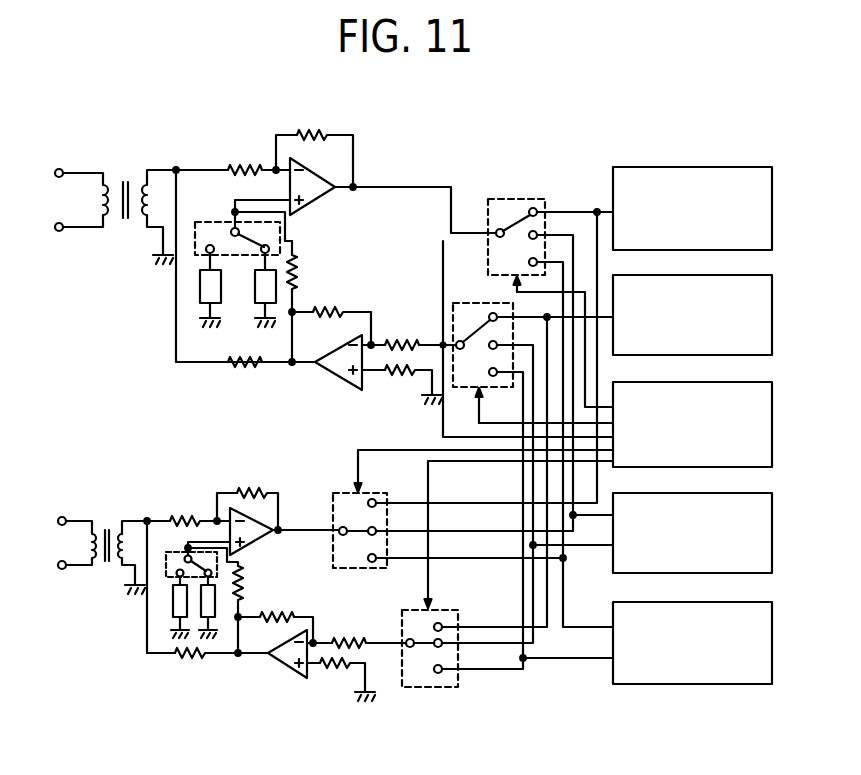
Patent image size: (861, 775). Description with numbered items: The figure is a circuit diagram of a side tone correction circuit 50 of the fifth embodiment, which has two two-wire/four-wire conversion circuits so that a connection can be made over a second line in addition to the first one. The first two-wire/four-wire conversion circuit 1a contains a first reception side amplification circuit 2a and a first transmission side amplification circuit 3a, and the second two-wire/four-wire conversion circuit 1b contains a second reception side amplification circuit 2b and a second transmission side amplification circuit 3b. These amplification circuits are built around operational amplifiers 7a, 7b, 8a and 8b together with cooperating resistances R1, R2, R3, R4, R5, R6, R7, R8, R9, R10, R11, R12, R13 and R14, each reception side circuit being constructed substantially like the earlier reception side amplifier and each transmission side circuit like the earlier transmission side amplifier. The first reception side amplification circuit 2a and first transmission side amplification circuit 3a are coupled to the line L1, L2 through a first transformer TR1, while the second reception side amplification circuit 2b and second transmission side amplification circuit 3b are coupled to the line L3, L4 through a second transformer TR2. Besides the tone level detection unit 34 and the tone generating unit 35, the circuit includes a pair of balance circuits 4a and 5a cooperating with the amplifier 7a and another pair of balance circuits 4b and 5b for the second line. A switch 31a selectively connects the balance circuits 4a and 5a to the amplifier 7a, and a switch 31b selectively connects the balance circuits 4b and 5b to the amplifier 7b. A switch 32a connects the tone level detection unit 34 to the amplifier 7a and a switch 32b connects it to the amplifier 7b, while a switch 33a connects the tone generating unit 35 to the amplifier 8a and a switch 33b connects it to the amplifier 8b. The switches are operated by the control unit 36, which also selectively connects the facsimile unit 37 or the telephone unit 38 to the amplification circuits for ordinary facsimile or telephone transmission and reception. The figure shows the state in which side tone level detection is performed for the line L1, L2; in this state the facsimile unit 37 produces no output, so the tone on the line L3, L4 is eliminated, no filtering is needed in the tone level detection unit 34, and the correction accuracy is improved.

The first two-wire/four-wire conversion circuit 1a is at (600, 107).
The second two-wire/four-wire conversion circuit 1b is at (193, 697).
The first reception side amplification circuit 2a is at (368, 140).
The second reception side amplification circuit 2b is at (288, 493).
The first transmission side amplification circuit 3a is at (306, 388).
The second transmission side amplification circuit 3b is at (300, 723).
The balance circuit 4a is at (202, 290).
The balance circuit 4b is at (173, 605).
The balance circuit 5a is at (256, 290).
The balance circuit 5b is at (217, 605).
The operational amplifier 7a is at (319, 203).
The operational amplifier 7b is at (262, 543).
The operational amplifier 8a is at (338, 366).
The operational amplifier 8b is at (283, 664).
The switch 31a is at (218, 221).
The switch 31b is at (176, 621).
The switch 32a is at (528, 197).
The switch 32b is at (353, 570).
The switch 33a is at (472, 303).
The switch 33b is at (423, 690).
The tone level detection unit 34 is at (773, 222).
The tone generating unit 35 is at (773, 325).
The control unit 36 is at (773, 432).
The facsimile unit 37 is at (773, 545).
The telephone unit 38 is at (773, 652).
The side tone correction circuit 50 is at (502, 148).
The first transformer TR1 is at (119, 202).
The second transformer TR2 is at (106, 542).
The line L1 is at (39, 174).
The line L2 is at (39, 229).
The line L3 is at (43, 522).
The line L4 is at (43, 566).
The resistance R1 is at (307, 301).
The resistance R2 is at (245, 376).
The resistance R3 is at (233, 158).
The resistance R4 is at (314, 145).
The resistance R5 is at (409, 332).
The resistance R6 is at (402, 384).
The resistance R7 is at (331, 313).
The resistance R8 is at (253, 609).
The resistance R9 is at (207, 668).
The resistance R10 is at (188, 503).
The resistance R11 is at (247, 495).
The resistance R12 is at (356, 631).
The resistance R13 is at (341, 679).
The resistance R14 is at (277, 618).